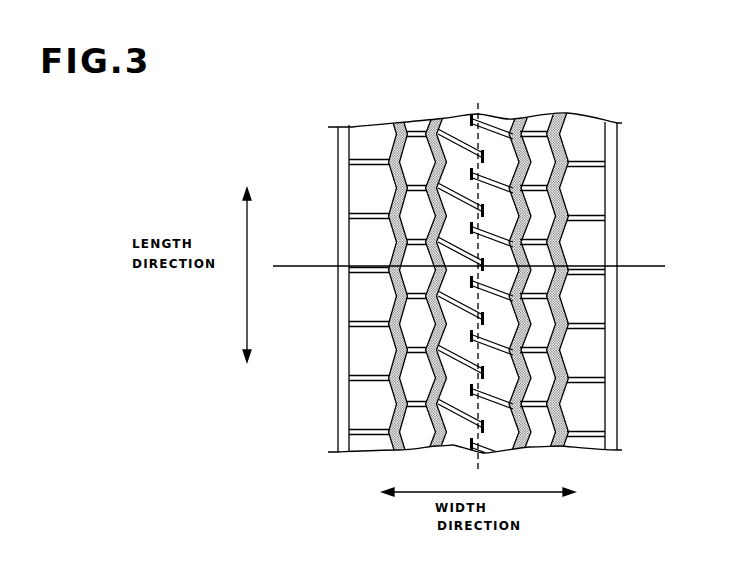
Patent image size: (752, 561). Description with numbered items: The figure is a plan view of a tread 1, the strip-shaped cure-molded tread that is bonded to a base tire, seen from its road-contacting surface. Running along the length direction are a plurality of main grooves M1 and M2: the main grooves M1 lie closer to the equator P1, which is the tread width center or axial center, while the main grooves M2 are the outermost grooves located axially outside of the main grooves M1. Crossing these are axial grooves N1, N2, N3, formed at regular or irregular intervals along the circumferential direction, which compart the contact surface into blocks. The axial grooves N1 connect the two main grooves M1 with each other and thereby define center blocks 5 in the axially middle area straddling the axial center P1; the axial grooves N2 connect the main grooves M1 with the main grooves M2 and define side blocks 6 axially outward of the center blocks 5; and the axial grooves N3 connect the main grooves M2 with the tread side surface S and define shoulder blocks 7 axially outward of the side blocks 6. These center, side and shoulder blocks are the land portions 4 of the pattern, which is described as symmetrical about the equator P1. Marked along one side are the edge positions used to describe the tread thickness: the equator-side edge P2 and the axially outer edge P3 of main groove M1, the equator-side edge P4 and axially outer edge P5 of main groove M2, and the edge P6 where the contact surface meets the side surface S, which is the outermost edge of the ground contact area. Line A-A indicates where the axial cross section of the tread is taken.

The tread 1 is at (316, 171).
The land portion 4 is at (475, 283).
The center blocks 5 is at (457, 128).
The side blocks 6 is at (415, 128).
The shoulder blocks 7 is at (362, 132).
The main grooves M1 is at (432, 447).
The main grooves M2 is at (392, 446).
The axial grooves N1 is at (497, 392).
The axial grooves N2 is at (392, 335).
The axial grooves N3 is at (362, 378).
The tread side surface S is at (347, 285).
The equator P1 is at (478, 103).
The axial center side edge of main groove M1 P2 is at (563, 177).
The axially outer edge of main groove M1 P3 is at (563, 200).
The axial center side edge of main groove M2 P4 is at (563, 222).
The axially outer edge of main groove M2 P5 is at (560, 252).
The axially outermost edge of the contact surface P6 is at (605, 145).
The line A- A is at (470, 268).